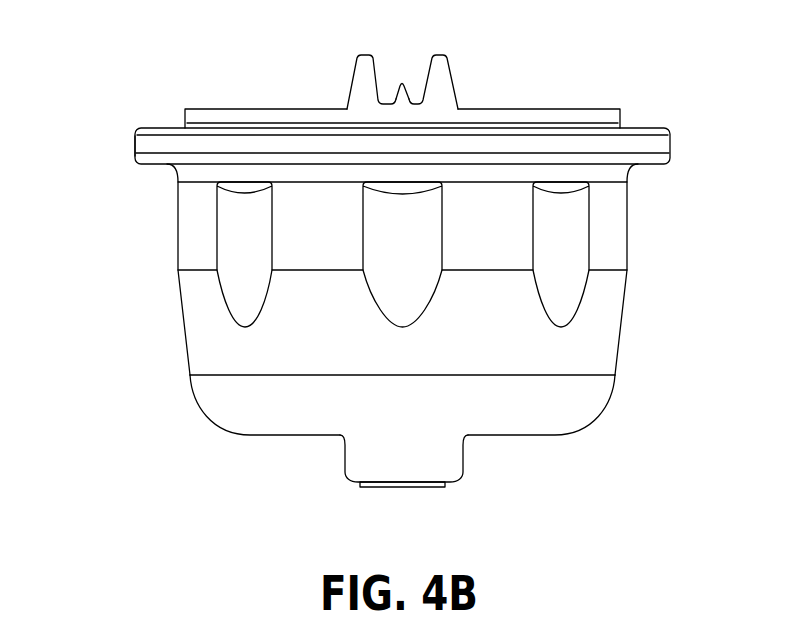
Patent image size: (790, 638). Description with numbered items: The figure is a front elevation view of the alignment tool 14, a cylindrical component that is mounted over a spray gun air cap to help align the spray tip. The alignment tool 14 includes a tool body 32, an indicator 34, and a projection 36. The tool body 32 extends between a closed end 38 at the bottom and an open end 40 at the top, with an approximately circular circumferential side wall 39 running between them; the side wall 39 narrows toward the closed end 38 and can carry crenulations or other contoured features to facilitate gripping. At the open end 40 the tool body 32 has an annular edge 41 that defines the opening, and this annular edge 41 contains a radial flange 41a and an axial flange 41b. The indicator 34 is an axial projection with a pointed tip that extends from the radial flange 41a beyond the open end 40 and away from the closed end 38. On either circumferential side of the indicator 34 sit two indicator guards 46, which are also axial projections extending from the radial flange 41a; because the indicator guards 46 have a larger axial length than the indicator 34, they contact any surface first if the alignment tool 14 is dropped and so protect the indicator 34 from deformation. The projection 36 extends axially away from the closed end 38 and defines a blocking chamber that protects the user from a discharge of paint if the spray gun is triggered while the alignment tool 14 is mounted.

The alignment tool 14 is at (542, 80).
The tool body 32 is at (164, 338).
The indicator 34 is at (402, 82).
The projection 36 is at (377, 488).
The closed end 38 is at (623, 412).
The side wall 39 is at (628, 302).
The open end 40 is at (255, 70).
The annular edge 41 is at (122, 108).
The radial flange 41a is at (215, 107).
The axial flange 41b is at (131, 142).
The indicator guards 46 is at (349, 94).